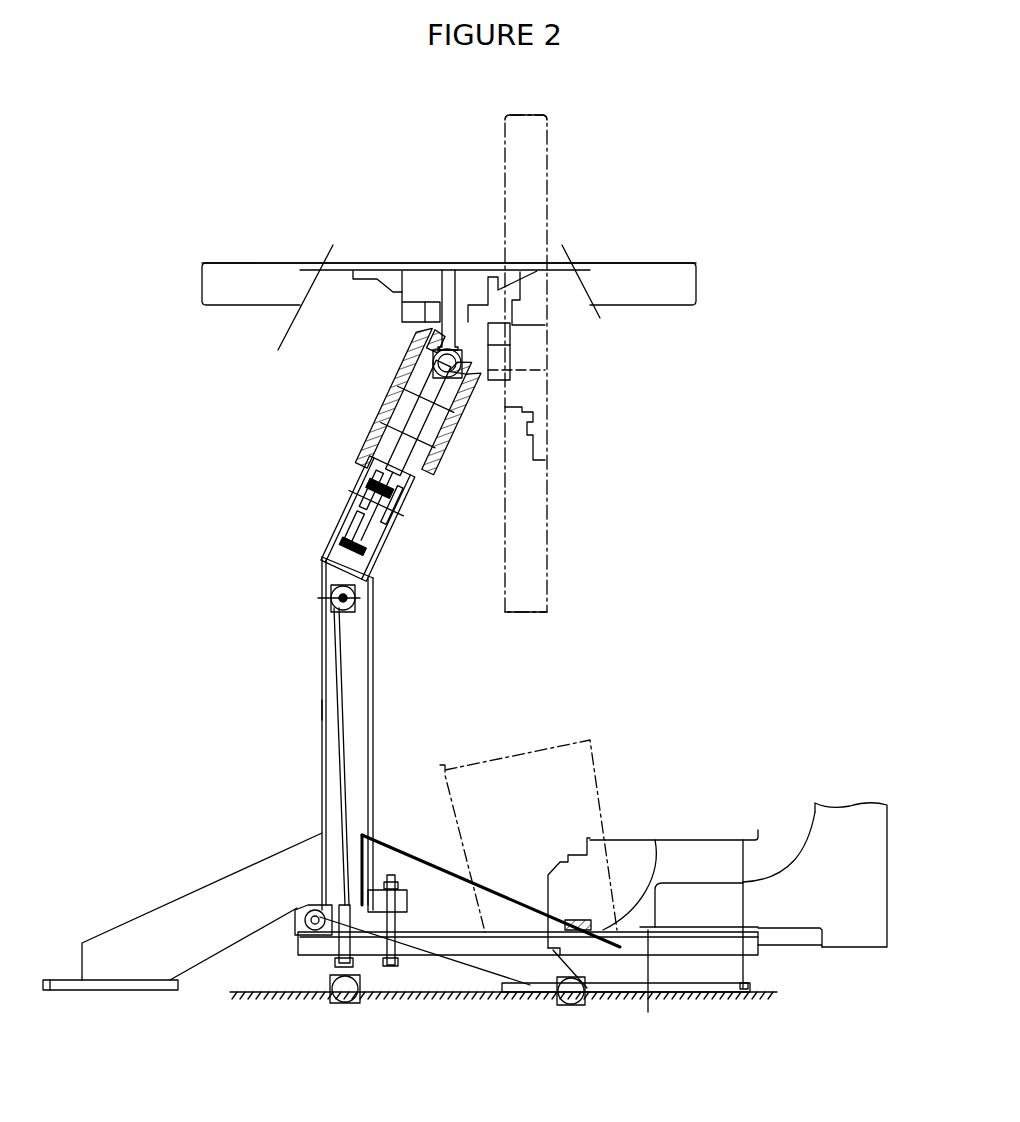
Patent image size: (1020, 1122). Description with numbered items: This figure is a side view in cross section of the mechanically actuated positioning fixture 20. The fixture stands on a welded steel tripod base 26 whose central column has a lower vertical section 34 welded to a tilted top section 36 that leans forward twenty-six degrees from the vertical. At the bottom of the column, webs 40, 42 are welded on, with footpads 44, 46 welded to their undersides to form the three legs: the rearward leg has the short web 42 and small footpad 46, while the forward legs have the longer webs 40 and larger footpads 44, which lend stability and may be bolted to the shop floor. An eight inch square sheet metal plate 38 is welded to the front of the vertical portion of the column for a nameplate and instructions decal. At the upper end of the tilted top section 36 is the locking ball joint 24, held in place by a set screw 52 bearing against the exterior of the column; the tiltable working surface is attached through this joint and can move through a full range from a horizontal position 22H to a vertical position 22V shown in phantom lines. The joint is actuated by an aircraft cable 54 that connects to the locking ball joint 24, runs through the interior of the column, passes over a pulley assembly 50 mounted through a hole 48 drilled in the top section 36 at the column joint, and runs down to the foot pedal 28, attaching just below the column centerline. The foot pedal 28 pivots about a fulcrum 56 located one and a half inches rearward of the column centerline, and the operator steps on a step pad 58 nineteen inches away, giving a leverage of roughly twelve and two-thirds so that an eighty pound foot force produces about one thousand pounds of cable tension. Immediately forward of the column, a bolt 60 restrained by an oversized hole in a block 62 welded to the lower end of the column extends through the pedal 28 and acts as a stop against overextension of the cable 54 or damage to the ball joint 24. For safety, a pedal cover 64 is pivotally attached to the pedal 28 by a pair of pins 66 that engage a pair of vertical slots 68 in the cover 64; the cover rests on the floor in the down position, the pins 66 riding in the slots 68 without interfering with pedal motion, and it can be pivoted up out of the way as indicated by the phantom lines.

The positioning fixture 20 is at (724, 206).
The horizontal position 22H is at (248, 263).
The vertical position 22V is at (548, 190).
The locking ball joint 24 is at (398, 395).
The tripod base 26 is at (270, 712).
The foot pedal 28 is at (760, 945).
The lower vertical section 34 is at (352, 730).
The tilted top section 36 is at (357, 508).
The sheet metal plate 38 is at (373, 666).
The web 40 is at (545, 973).
The short web 42 is at (215, 880).
The footpad 44 is at (673, 993).
The small footpad 46 is at (152, 992).
The hole 48 is at (396, 524).
The pulley assembly 50 is at (356, 597).
The set screw 52 is at (437, 477).
The cable 54 is at (333, 685).
The fulcrum 56 is at (295, 925).
The step pad 58 is at (728, 932).
The bolt 60 is at (390, 875).
The block 62 is at (408, 902).
The pedal cover 64 is at (653, 883).
The pins 66 is at (577, 912).
The slots 68 is at (633, 917).